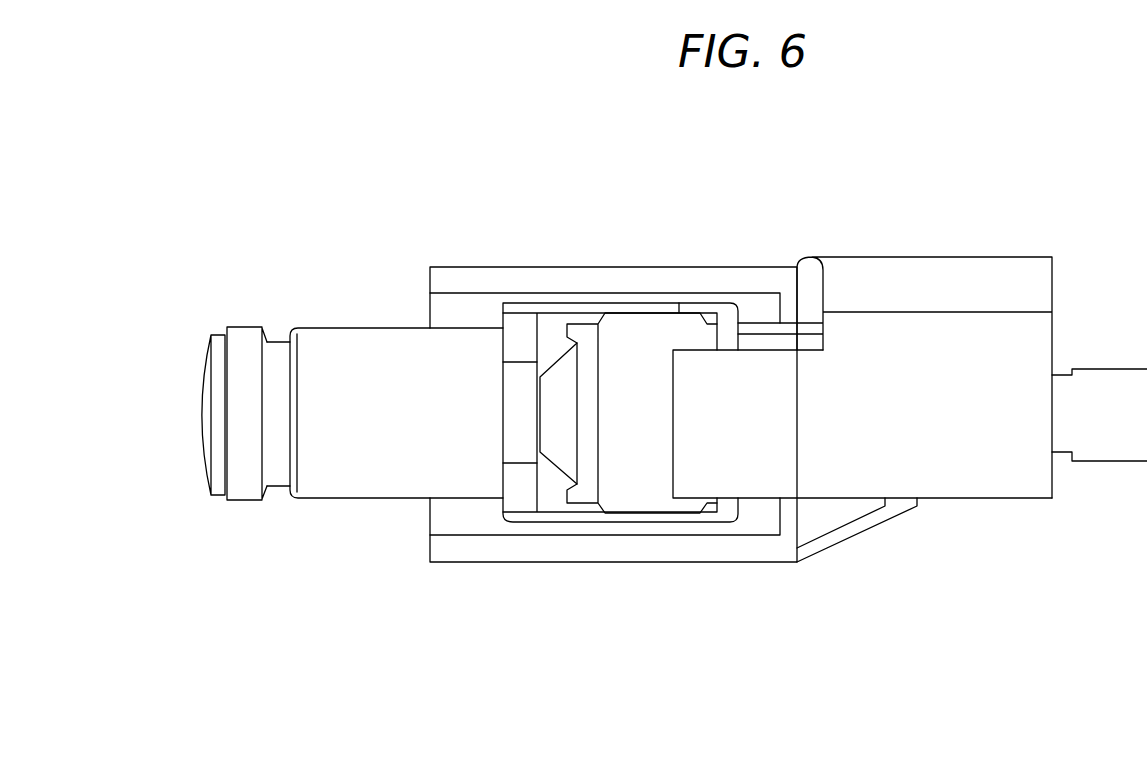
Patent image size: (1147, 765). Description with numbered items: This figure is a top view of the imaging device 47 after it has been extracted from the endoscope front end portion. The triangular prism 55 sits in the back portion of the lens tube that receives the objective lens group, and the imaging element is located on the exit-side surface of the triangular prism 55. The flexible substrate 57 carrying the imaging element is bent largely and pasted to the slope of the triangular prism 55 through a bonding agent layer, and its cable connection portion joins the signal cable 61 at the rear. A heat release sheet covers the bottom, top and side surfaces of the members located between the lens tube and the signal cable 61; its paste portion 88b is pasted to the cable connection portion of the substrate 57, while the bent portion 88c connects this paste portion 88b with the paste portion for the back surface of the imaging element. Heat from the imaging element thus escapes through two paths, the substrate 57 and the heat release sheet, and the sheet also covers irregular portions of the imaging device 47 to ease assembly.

The imaging device 47 is at (481, 245).
The flexible substrate 57 is at (637, 362).
The triangular prism 55 is at (563, 447).
The bent portion 88c is at (945, 275).
The paste portion 88b is at (978, 477).
The signal cable 61 is at (1115, 393).